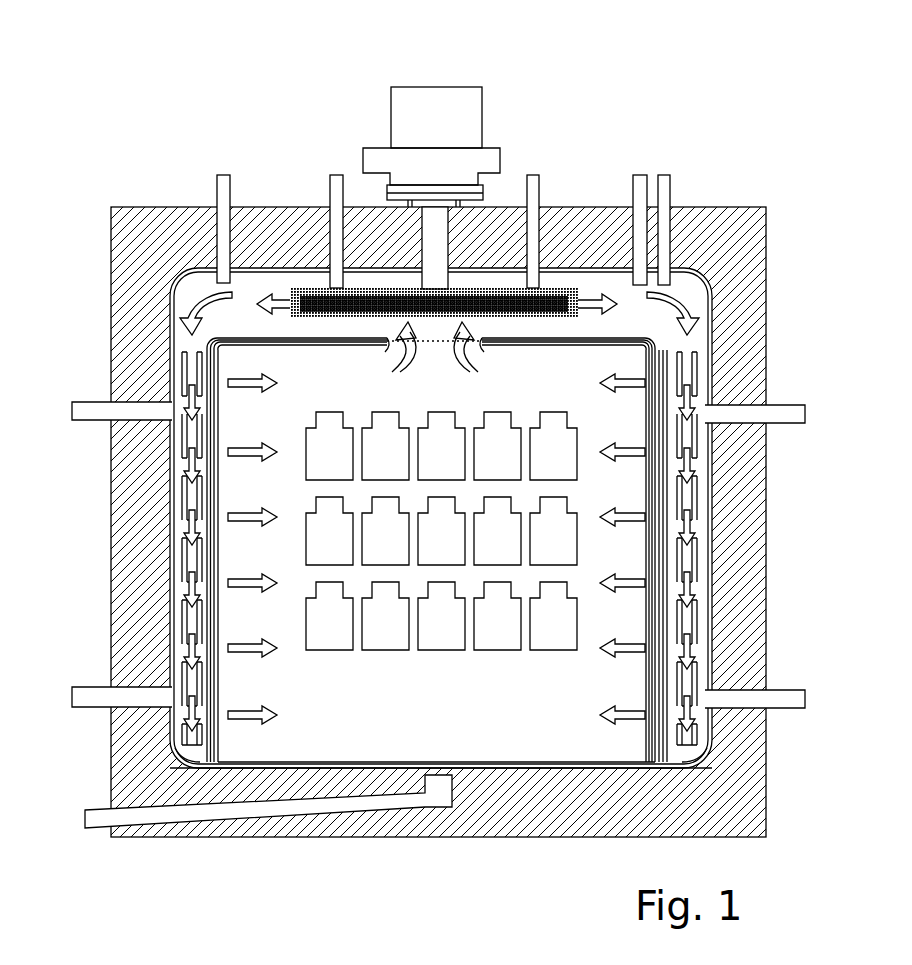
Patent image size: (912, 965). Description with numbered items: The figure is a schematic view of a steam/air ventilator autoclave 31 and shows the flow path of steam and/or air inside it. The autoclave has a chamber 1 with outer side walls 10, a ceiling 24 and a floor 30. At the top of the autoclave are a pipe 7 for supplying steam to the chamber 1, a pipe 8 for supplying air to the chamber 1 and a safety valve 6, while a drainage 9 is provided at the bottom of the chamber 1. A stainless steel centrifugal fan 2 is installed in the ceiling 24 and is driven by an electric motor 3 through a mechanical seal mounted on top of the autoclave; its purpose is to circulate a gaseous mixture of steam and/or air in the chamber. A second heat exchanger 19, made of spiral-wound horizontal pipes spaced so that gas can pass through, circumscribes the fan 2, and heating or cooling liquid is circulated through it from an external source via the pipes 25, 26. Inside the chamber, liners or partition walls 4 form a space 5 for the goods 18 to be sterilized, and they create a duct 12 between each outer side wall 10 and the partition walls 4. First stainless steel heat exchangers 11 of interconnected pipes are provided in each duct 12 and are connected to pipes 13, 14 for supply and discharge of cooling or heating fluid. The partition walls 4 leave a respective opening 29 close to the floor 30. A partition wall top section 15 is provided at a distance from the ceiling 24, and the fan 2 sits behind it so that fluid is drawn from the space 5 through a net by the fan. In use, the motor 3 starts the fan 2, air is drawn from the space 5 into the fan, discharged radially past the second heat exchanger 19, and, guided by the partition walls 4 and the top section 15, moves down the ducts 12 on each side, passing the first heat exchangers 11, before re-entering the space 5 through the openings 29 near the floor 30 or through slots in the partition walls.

The chamber 1 is at (244, 320).
The fan 2 is at (390, 287).
The electric motor 3 is at (440, 97).
The partition walls 4 is at (218, 685).
The space 5 is at (443, 690).
The safety valve 6 is at (223, 175).
The pipe 7 is at (667, 195).
The pipe 8 is at (636, 197).
The drainage 9 is at (99, 828).
The outer side walls 10 is at (160, 313).
The first heat exchangers 11 is at (180, 587).
The duct 12 is at (187, 477).
The pipe 13 is at (92, 687).
The pipe 14 is at (97, 402).
The partition wall top section 15 is at (627, 332).
The goods 18 is at (500, 412).
The second heat exchanger 19 is at (323, 320).
The ceiling 24 is at (200, 266).
The pipe 25 is at (337, 175).
The pipe 26 is at (534, 175).
The opening 29 is at (200, 748).
The floor 30 is at (577, 770).
The autoclave 31 is at (646, 93).